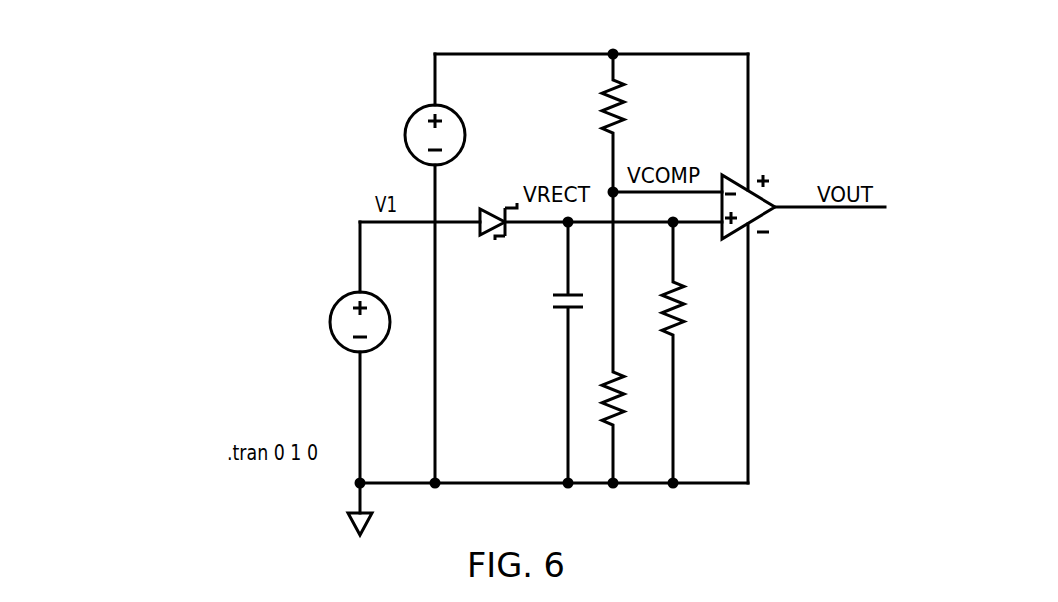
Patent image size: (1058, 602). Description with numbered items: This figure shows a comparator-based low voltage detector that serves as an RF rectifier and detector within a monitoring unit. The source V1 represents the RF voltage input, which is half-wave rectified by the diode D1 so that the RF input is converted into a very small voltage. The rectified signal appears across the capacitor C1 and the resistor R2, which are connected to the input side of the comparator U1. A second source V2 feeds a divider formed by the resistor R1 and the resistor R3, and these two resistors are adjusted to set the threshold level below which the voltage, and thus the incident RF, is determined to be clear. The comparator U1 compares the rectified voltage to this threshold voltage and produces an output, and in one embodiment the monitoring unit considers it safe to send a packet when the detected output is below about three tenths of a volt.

The RF voltage input V1 is at (242, 308).
The voltage source V2 is at (430, 126).
The diode D1 is at (495, 226).
The resistor R1 is at (637, 123).
The resistor R2 is at (692, 352).
The resistor R3 is at (629, 337).
The capacitor C1 is at (556, 352).
The comparator U1 is at (775, 205).